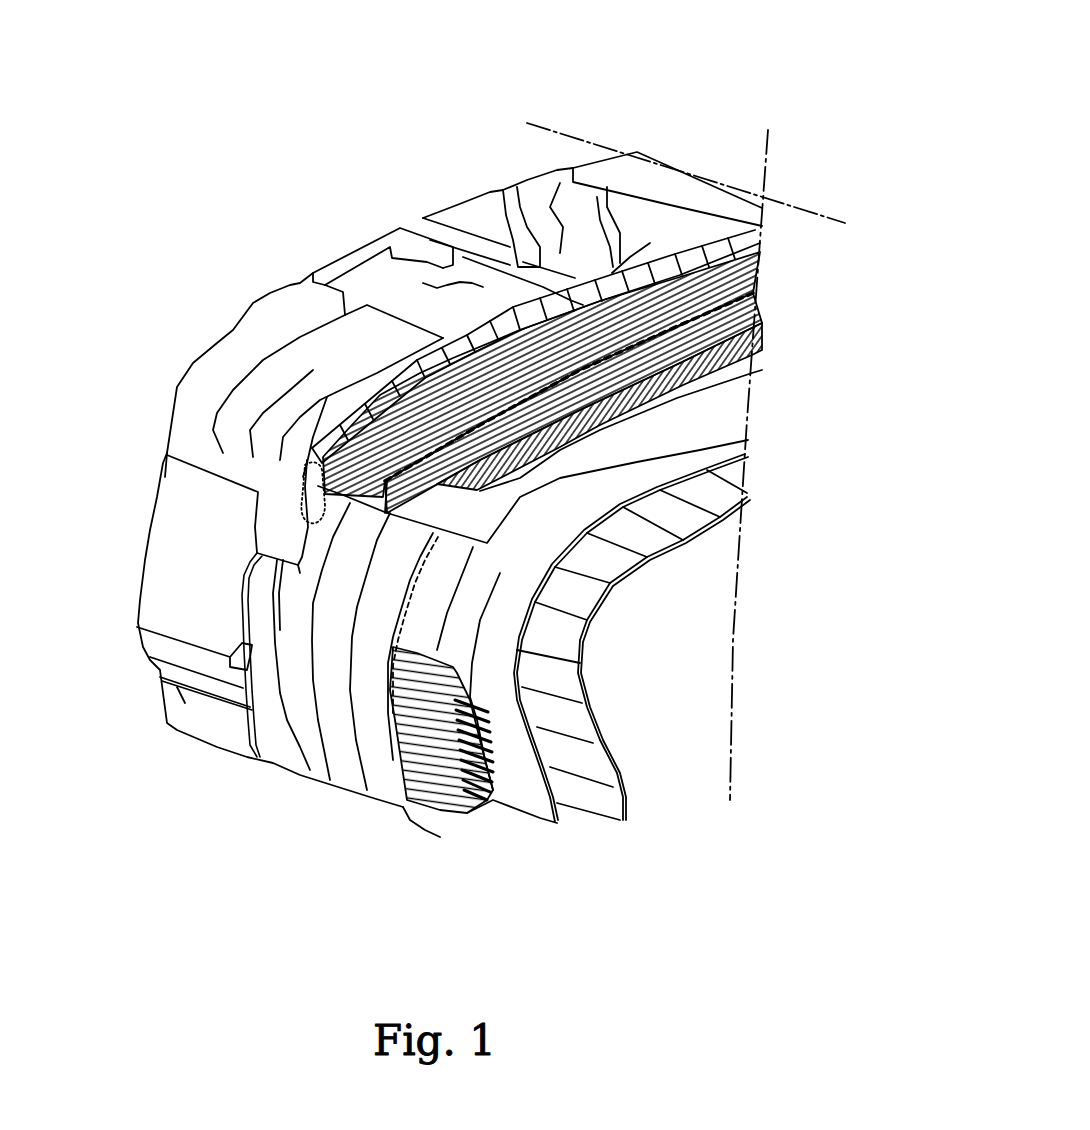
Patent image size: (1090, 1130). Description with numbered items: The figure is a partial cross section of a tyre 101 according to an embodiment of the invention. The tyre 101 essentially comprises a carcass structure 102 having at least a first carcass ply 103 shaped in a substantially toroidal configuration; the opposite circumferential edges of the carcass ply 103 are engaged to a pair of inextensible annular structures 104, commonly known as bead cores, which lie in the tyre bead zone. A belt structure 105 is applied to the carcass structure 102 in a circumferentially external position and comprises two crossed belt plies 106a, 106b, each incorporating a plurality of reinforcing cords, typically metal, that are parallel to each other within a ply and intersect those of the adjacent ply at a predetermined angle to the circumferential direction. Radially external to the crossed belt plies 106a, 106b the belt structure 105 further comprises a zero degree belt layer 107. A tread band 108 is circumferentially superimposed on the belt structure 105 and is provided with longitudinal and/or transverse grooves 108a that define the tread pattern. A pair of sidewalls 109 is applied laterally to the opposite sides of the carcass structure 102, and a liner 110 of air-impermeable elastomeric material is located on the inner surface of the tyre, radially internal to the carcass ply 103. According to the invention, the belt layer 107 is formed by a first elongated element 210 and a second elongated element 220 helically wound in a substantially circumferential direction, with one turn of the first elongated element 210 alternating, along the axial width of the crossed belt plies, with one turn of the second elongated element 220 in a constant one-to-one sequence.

The tyre 101 is at (456, 244).
The carcass structure 102 is at (441, 758).
The first carcass ply 103 is at (633, 645).
The inextensible annular structures 104 is at (506, 814).
The belt structure 105 is at (627, 388).
The belt ply 106a is at (648, 406).
The belt ply 106b is at (585, 456).
The belt layer 107 is at (566, 346).
The tread band 108 is at (667, 178).
The grooves 108a is at (606, 180).
The sidewalls 109 is at (234, 630).
The liner 110 is at (631, 638).
The first elongated element 210 is at (393, 475).
The second elongated element 220 is at (478, 425).